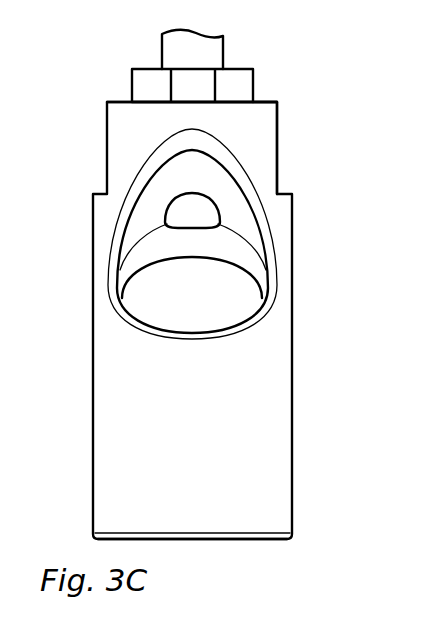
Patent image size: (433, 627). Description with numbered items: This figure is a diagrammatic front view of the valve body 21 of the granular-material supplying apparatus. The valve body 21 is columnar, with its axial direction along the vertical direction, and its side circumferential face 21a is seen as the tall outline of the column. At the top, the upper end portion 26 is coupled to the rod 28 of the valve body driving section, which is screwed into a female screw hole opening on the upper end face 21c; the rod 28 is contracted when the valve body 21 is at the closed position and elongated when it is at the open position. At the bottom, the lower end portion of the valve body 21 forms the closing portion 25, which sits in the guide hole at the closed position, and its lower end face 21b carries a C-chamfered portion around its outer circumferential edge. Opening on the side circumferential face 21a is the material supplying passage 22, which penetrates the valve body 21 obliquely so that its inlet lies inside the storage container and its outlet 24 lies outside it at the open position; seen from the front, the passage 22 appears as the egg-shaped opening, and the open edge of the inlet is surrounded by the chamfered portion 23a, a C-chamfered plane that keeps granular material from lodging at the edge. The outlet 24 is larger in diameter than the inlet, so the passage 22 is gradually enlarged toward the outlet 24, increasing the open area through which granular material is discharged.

The valve body 21 is at (89, 70).
The side circumferential face 21a is at (105, 450).
The lower end face 21b is at (262, 542).
The upper end face 21c is at (263, 99).
The material supplying passage 22 is at (249, 267).
The chamfered portion 23a is at (119, 216).
The outlet 24 is at (247, 283).
The closing portion 25 is at (280, 520).
The upper end portion 26 is at (120, 116).
The rod 28 is at (218, 44).